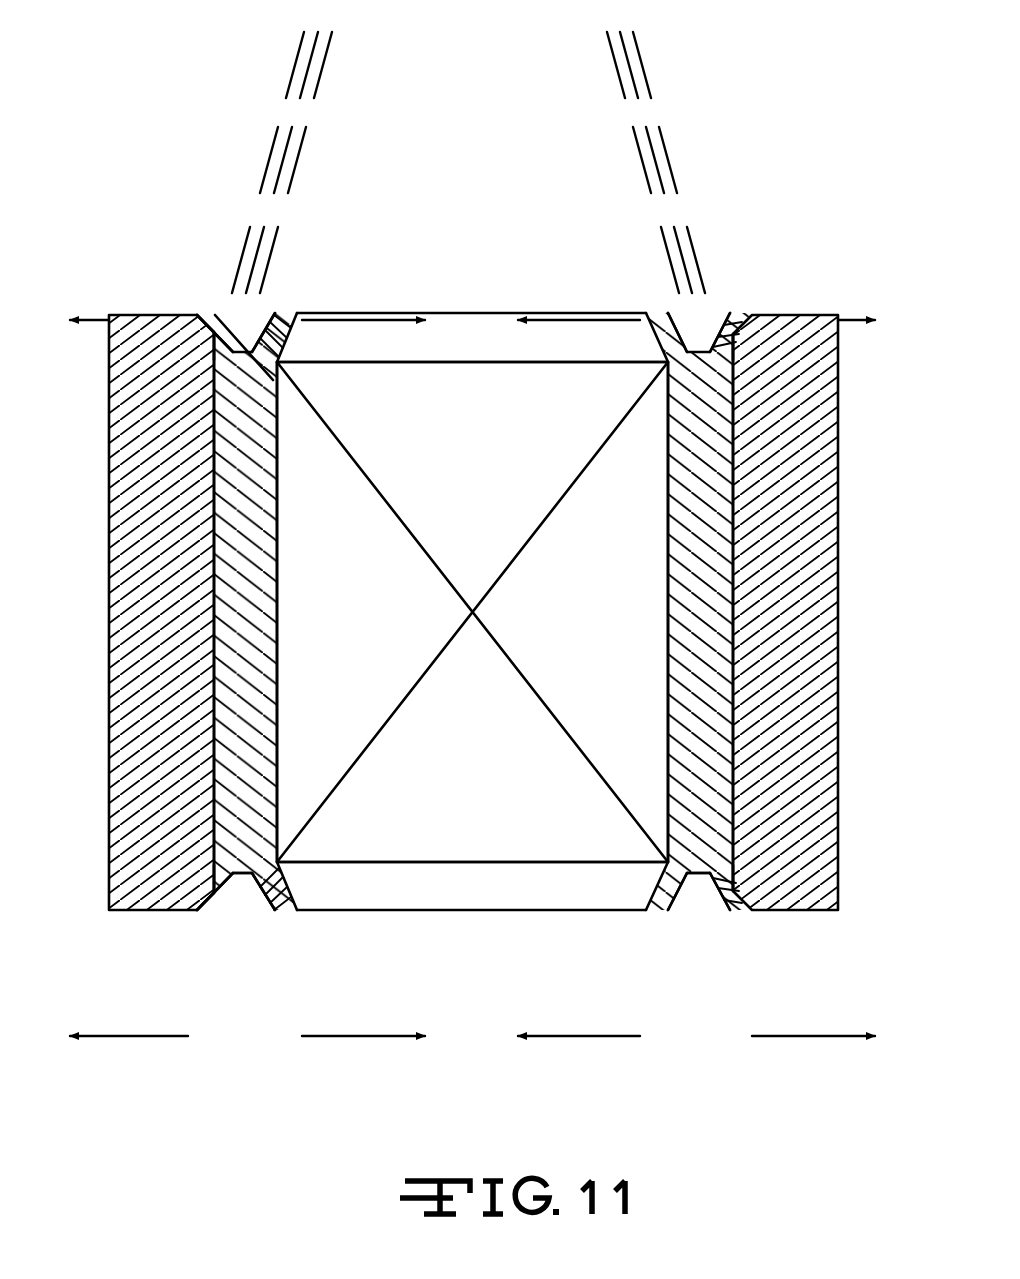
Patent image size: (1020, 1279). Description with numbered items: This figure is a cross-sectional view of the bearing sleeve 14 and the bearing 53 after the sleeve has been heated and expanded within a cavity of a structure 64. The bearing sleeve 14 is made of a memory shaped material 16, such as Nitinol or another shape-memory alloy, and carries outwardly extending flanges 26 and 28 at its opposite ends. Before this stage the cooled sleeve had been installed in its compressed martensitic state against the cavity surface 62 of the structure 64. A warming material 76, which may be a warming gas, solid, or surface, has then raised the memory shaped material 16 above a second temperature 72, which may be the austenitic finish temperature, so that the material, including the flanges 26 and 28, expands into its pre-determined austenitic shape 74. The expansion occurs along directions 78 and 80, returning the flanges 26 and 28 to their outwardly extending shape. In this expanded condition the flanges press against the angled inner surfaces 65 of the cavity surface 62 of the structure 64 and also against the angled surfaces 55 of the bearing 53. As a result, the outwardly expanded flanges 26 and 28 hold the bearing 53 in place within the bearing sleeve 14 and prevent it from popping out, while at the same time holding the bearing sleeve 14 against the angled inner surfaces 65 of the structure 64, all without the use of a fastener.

The bearing sleeve 14 is at (287, 315).
The memory shaped material 16 is at (203, 313).
The flange 26 is at (212, 342).
The flange 28 is at (205, 907).
The bearing 53 is at (464, 820).
The angled surfaces 55 is at (283, 342).
The cavity surface 62 is at (737, 402).
The structure 64 is at (140, 700).
The inner surfaces 65 is at (207, 343).
The second temperature 72 is at (212, 313).
The austenitic shape 74 is at (202, 313).
The warming material 76 is at (325, 57).
The direction 78 is at (93, 323).
The direction 80 is at (365, 315).